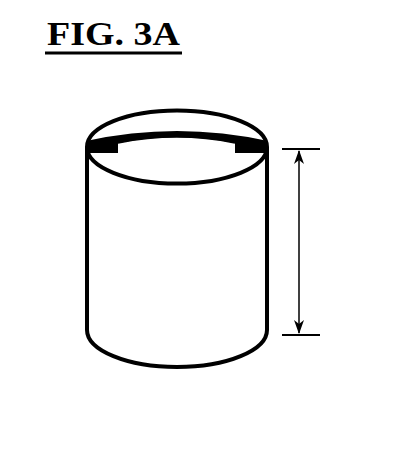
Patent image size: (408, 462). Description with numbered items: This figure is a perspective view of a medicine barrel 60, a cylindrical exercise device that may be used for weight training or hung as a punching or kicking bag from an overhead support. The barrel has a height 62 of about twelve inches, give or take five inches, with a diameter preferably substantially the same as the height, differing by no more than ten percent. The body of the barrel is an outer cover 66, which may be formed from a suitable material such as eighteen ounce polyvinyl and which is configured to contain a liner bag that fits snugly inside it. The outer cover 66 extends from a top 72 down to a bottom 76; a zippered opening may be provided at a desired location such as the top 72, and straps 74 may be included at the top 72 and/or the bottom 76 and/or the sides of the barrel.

The medicine barrel 60 is at (97, 130).
The height 62 is at (300, 242).
The outer cover 66 is at (100, 242).
The top 72 is at (243, 130).
The straps 74 is at (158, 133).
The bottom 76 is at (138, 362).